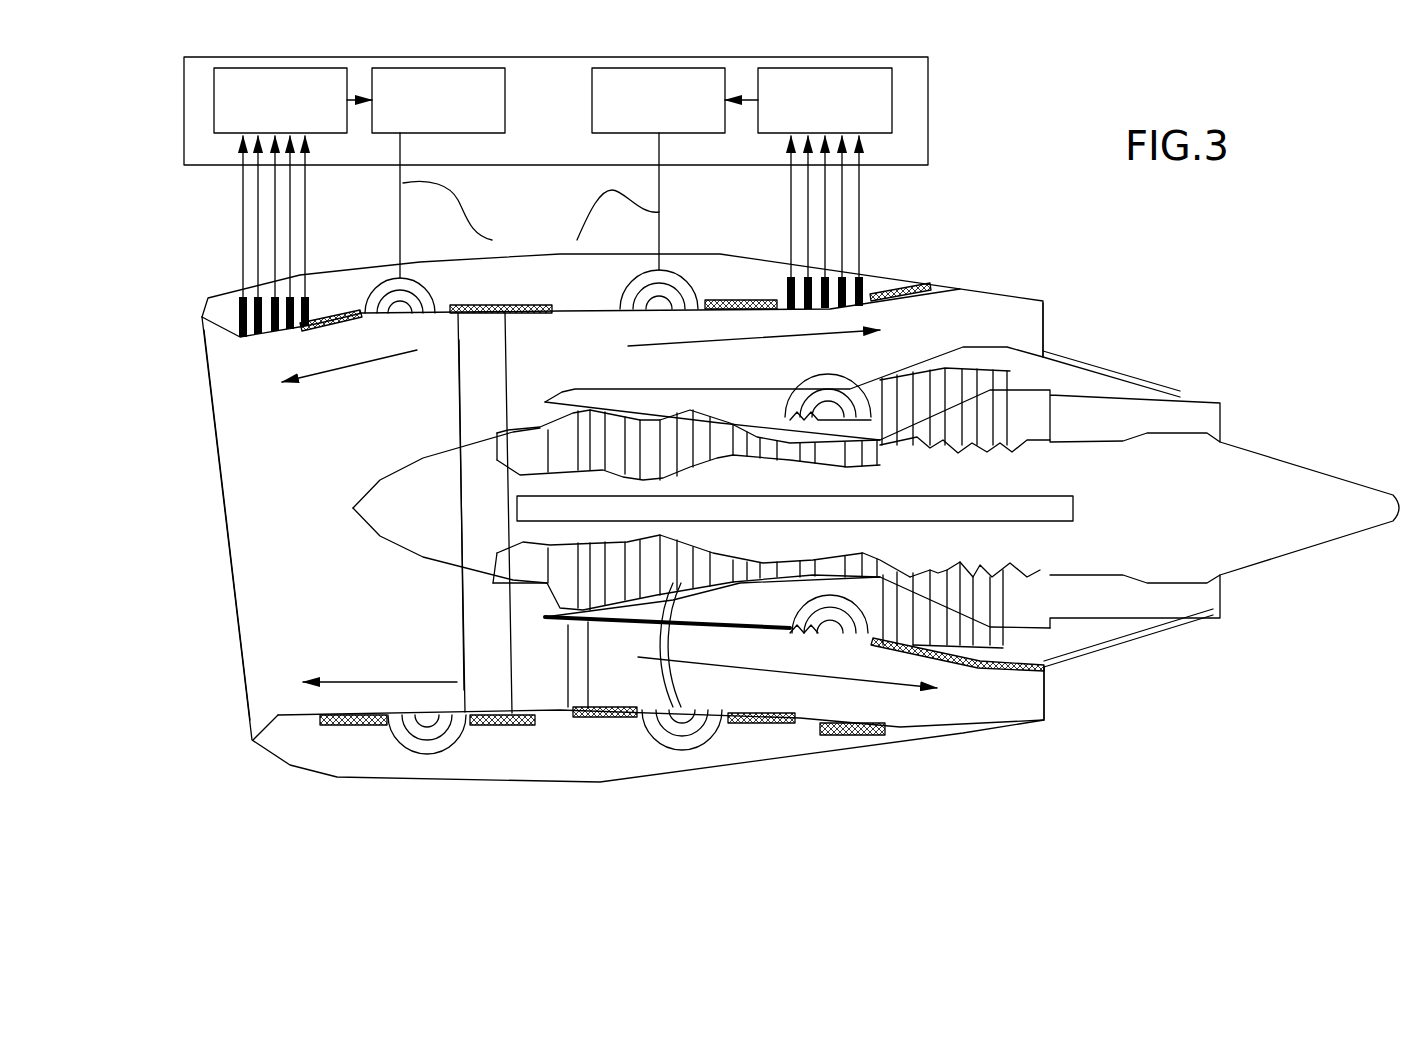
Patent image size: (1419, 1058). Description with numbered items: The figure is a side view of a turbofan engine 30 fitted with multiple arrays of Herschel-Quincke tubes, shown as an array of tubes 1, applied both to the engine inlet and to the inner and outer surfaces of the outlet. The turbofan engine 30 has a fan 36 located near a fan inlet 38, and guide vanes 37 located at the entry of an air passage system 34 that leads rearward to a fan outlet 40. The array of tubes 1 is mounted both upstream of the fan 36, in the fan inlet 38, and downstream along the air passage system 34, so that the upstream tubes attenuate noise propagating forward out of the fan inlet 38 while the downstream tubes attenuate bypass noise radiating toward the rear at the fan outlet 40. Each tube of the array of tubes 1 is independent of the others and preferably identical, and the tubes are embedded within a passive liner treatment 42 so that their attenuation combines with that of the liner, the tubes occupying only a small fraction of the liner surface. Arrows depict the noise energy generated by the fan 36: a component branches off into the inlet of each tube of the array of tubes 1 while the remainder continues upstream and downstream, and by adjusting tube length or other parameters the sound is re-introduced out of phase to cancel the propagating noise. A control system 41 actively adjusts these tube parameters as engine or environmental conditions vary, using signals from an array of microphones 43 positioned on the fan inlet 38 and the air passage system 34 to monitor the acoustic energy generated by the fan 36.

The array of tubes 1 is at (423, 285).
The turbofan engine 30 is at (895, 262).
The air passage system 34 is at (1020, 323).
The fan 36 is at (478, 402).
The guide vanes 37 is at (583, 690).
The fan inlet 38 is at (243, 428).
The fan outlet 40 is at (1044, 693).
The control system 41 is at (928, 122).
The passive liner treatment 42 is at (330, 727).
The array of microphones 43 is at (283, 337).